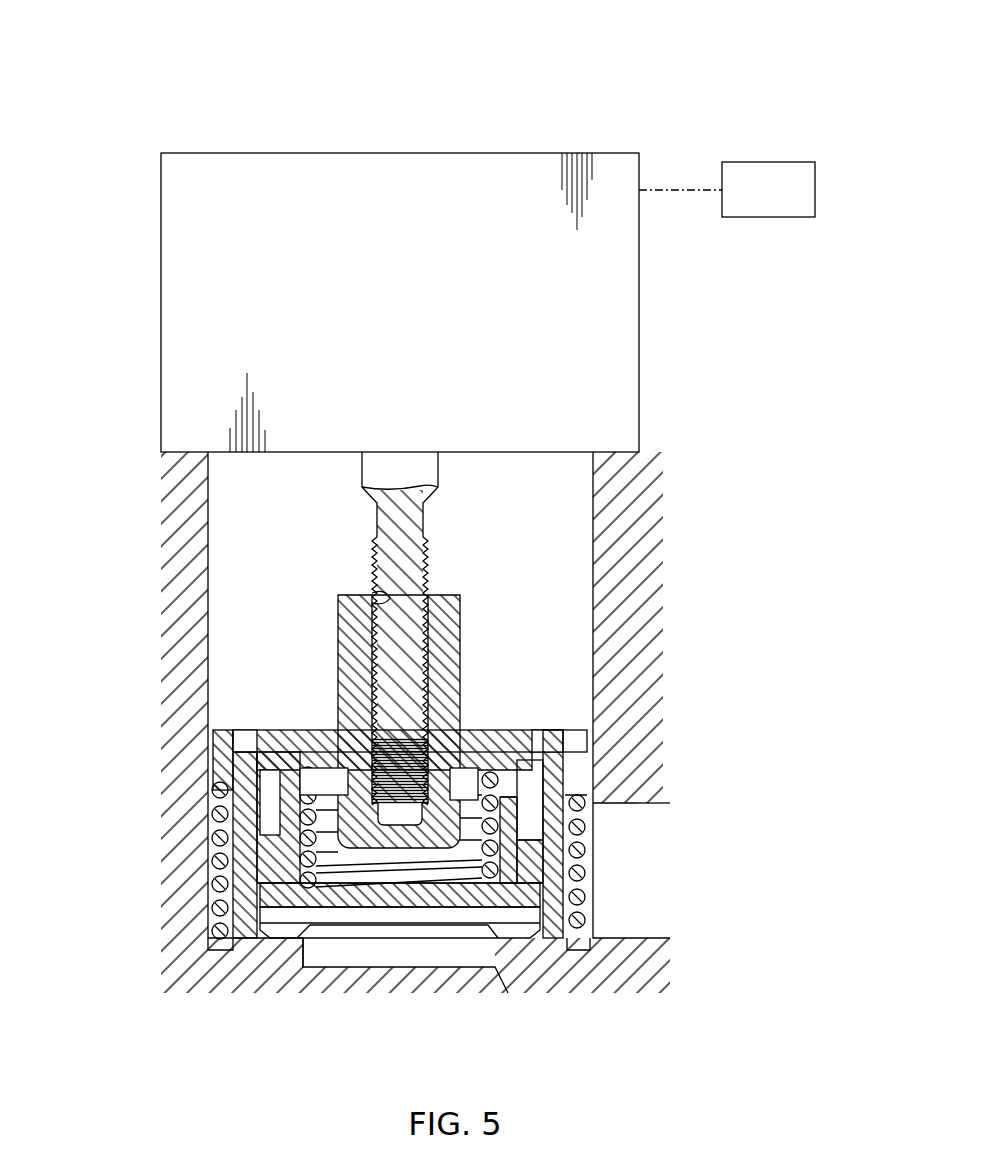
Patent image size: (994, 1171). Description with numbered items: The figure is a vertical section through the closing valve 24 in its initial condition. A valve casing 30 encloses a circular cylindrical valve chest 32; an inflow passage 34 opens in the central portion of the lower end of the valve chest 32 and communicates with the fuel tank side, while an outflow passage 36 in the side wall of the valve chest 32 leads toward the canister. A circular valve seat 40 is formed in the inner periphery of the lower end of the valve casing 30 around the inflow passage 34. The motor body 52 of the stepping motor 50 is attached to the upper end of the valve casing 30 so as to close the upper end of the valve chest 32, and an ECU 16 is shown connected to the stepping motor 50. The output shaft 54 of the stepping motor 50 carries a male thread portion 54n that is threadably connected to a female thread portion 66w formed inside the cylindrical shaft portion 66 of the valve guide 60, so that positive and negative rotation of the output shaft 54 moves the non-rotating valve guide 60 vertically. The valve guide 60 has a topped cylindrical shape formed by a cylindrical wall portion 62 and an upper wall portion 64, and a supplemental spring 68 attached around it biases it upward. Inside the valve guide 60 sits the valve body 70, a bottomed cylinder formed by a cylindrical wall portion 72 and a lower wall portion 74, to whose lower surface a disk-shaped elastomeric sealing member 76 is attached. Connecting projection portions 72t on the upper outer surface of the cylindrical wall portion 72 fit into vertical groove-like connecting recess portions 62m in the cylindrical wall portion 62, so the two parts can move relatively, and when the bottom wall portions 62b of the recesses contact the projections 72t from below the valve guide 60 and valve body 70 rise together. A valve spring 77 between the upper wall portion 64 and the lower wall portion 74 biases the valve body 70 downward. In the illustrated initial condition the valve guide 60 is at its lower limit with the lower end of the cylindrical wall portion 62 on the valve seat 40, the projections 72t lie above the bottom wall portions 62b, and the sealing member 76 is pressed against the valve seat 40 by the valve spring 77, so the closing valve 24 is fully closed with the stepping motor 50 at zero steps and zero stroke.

The closing valve 24 is at (598, 88).
The ECU 16 is at (737, 162).
The stepping motor 50 is at (262, 152).
The motor body 52 is at (190, 263).
The valve casing 30 is at (640, 617).
The valve chest 32 is at (558, 531).
The inflow passage 34 is at (474, 978).
The outflow passage 36 is at (626, 914).
The output shaft 54 is at (420, 472).
The male thread portion 54n is at (370, 553).
The cylindrical shaft portion 66 is at (443, 607).
The female thread portion 66w is at (375, 588).
The valve guide 60 is at (313, 729).
The connecting recess portions 62m is at (267, 740).
The cylindrical wall portion 62 is at (245, 897).
The bottom wall portions 62b is at (275, 840).
The upper wall portion 64 is at (503, 742).
The supplemental spring 68 is at (225, 793).
The valve body 70 is at (270, 865).
The cylindrical wall portion 72 is at (578, 875).
The connecting projection portions 72t is at (265, 778).
The lower wall portion 74 is at (333, 895).
The sealing member 76 is at (433, 916).
The valve spring 77 is at (380, 888).
The valve seat 40 is at (273, 945).